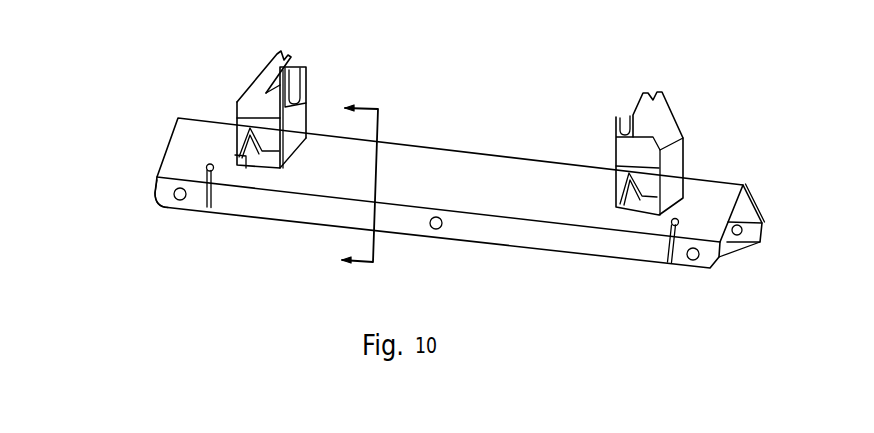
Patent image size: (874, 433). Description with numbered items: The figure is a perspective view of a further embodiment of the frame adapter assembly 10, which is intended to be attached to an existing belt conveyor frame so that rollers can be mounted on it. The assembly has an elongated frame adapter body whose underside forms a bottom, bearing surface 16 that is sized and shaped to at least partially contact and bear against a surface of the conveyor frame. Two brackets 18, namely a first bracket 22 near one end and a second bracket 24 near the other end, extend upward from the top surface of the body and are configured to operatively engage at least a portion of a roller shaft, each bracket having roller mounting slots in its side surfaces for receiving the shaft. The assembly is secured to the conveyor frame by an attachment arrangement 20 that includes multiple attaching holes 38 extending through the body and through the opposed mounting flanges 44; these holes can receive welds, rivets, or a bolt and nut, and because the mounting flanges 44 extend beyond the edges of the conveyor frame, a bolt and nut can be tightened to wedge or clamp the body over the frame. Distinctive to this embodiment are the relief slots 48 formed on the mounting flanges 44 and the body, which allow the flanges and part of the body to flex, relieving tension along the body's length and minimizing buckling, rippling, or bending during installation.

The frame adapter assembly 10 is at (447, 110).
The bottom, bearing surface 16 is at (740, 212).
The bracket 18 is at (320, 107).
The attachment arrangement 20 is at (142, 184).
The first bracket 22 is at (233, 98).
The second bracket 24 is at (680, 132).
The attaching hole 38 is at (177, 207).
The mounting flange 44 is at (156, 194).
The relief slot 48 is at (212, 199).